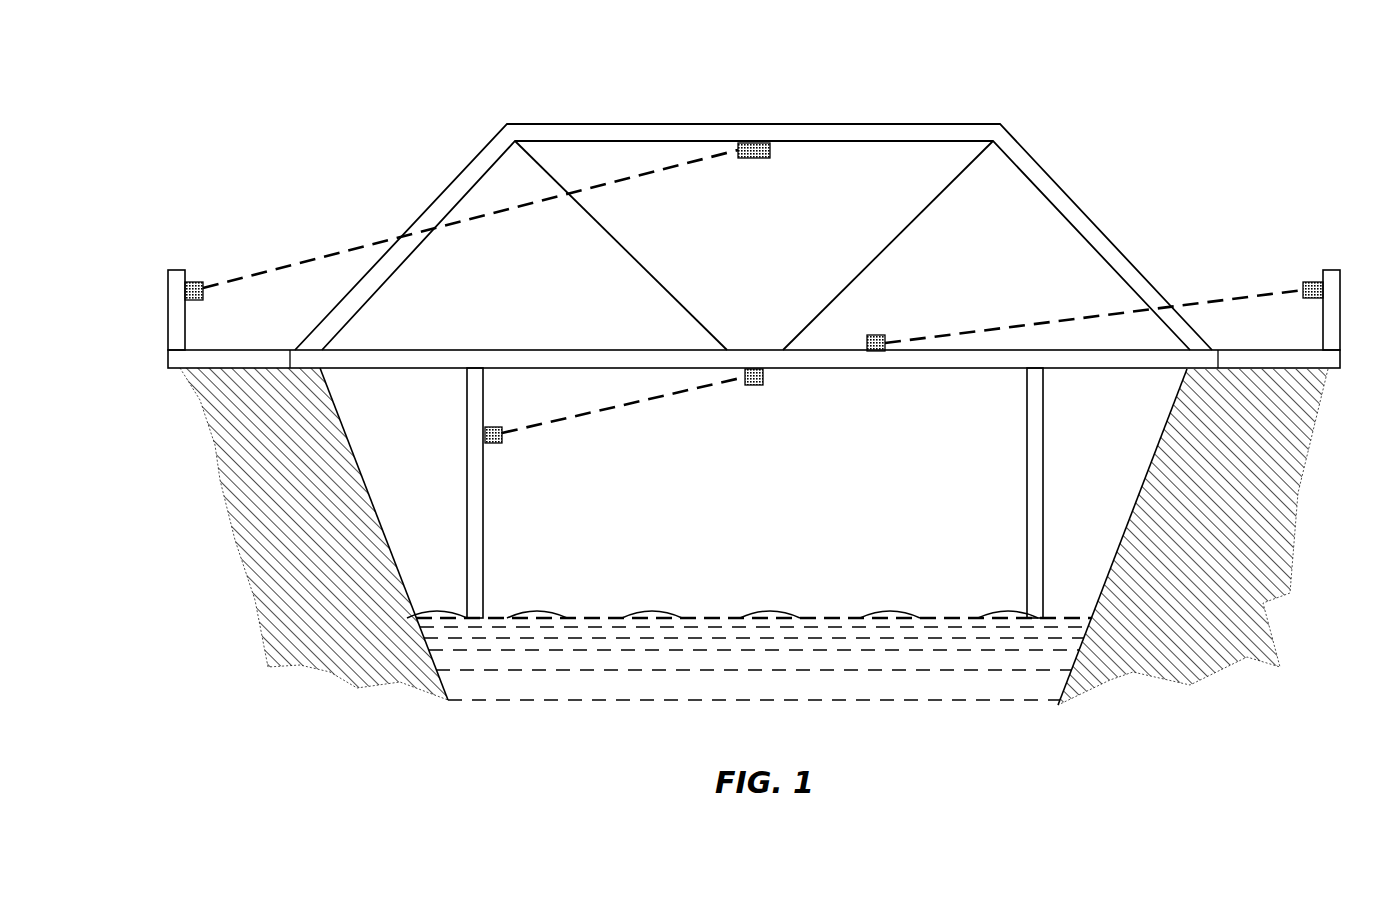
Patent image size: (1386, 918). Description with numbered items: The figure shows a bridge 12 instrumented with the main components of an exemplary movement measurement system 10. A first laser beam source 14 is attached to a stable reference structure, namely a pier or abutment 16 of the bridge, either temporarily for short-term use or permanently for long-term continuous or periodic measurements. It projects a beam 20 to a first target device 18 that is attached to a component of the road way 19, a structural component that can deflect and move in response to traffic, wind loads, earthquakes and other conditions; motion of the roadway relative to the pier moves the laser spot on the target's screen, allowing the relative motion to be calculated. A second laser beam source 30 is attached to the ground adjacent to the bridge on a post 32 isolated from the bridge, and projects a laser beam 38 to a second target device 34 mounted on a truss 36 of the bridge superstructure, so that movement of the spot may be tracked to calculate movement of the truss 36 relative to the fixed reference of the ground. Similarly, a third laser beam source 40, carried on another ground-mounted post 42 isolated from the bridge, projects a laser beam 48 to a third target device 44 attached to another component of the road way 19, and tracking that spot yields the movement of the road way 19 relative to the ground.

The system 10 is at (402, 70).
The bridge 12 is at (1047, 176).
The first laser beam source 14 is at (502, 440).
The pier or abutment 16 is at (458, 546).
The first target device 18 is at (755, 385).
The road way 19 is at (403, 360).
The beam 20 is at (580, 418).
The second laser beam source 30 is at (192, 282).
The post 32 is at (175, 270).
The second target device 34 is at (752, 160).
The truss 36 is at (907, 135).
The laser beam 38 is at (478, 217).
The third laser beam source 40 is at (1312, 280).
The post 42 is at (1335, 288).
The third target device 44 is at (880, 333).
The laser beam 48 is at (1080, 318).